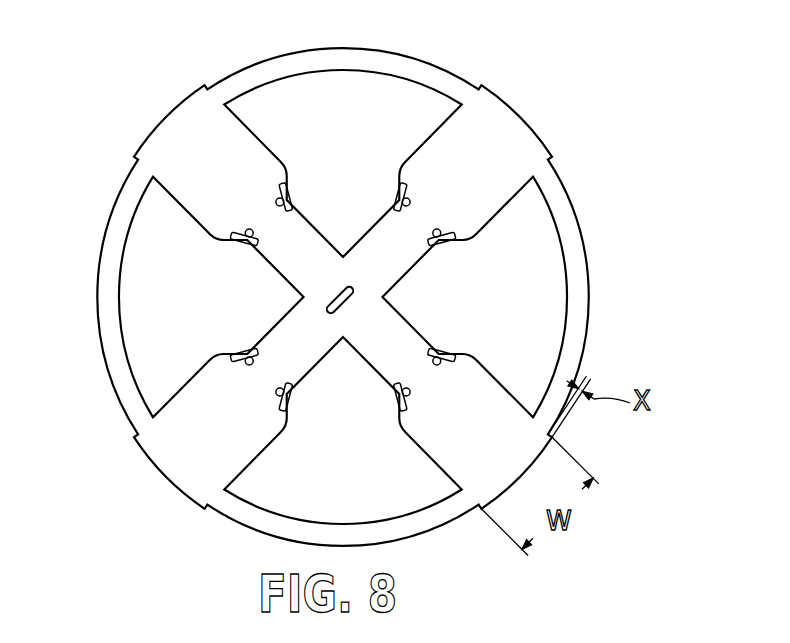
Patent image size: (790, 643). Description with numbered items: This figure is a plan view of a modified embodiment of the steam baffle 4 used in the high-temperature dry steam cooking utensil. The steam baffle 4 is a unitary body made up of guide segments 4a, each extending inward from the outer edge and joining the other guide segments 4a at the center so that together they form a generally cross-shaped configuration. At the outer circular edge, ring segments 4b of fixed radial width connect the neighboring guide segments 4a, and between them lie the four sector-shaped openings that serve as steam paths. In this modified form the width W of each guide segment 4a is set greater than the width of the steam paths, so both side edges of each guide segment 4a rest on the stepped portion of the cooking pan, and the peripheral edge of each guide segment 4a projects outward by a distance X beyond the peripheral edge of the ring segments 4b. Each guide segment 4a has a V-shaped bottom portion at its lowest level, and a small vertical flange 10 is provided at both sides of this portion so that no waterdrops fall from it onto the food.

The steam baffle 4 is at (346, 274).
The guide segments 4a is at (243, 147).
The ring segments 4b is at (565, 223).
The small vertical flange 10 is at (283, 204).